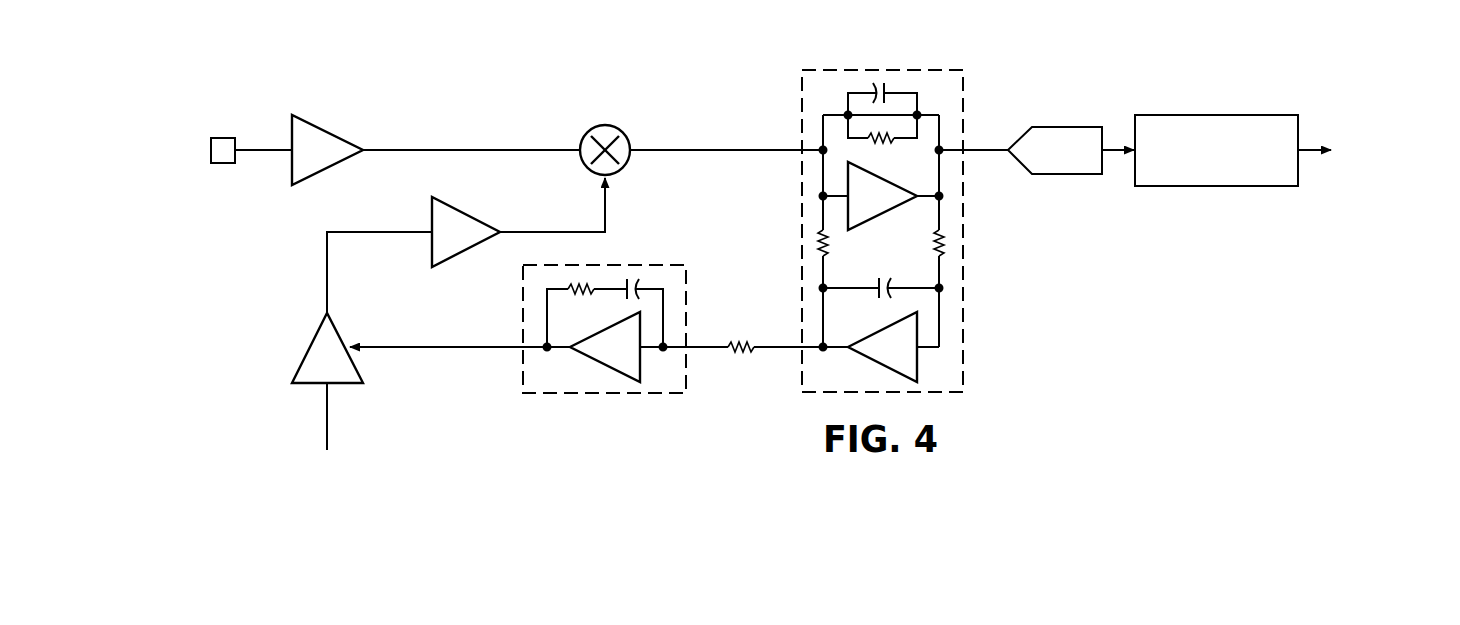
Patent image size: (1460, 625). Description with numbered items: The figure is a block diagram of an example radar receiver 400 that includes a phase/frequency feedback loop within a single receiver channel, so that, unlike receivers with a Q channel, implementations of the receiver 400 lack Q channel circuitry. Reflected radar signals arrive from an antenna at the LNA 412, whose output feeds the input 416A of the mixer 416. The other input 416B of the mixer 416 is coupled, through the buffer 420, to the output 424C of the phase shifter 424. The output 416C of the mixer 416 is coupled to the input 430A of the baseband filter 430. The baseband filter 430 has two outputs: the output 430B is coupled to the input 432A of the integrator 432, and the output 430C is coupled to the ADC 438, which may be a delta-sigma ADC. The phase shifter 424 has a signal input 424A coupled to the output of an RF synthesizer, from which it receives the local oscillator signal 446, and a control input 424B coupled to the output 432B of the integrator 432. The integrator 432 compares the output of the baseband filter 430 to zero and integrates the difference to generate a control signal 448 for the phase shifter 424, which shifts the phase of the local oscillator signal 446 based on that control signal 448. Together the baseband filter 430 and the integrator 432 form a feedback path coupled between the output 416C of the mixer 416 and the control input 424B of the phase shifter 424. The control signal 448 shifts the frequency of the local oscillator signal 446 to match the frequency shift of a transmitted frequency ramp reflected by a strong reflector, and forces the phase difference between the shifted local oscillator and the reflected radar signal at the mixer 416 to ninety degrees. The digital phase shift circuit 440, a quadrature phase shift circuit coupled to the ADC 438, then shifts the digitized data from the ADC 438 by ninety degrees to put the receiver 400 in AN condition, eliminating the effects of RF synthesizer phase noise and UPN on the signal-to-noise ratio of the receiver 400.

The receiver 400 is at (158, 180).
The LNA 412 is at (328, 132).
The mixer 416 is at (598, 127).
The input 416A is at (573, 152).
The input 416B is at (607, 200).
The output 416C is at (638, 148).
The buffer 420 is at (490, 193).
The phase shifter 424 is at (307, 358).
The signal input 424A is at (323, 392).
The control input 424B is at (372, 345).
The output 424C is at (326, 300).
The baseband filter 430 is at (968, 218).
The input 430A is at (777, 148).
The output 430B is at (778, 345).
The output 430C is at (985, 147).
The integrator 432 is at (590, 397).
The input 432A is at (710, 350).
The output 432B is at (500, 350).
The ADC 438 is at (1068, 127).
The digital phase shift circuit 440 is at (1218, 115).
The local oscillator signal 446 is at (329, 418).
The control signal 448 is at (432, 349).